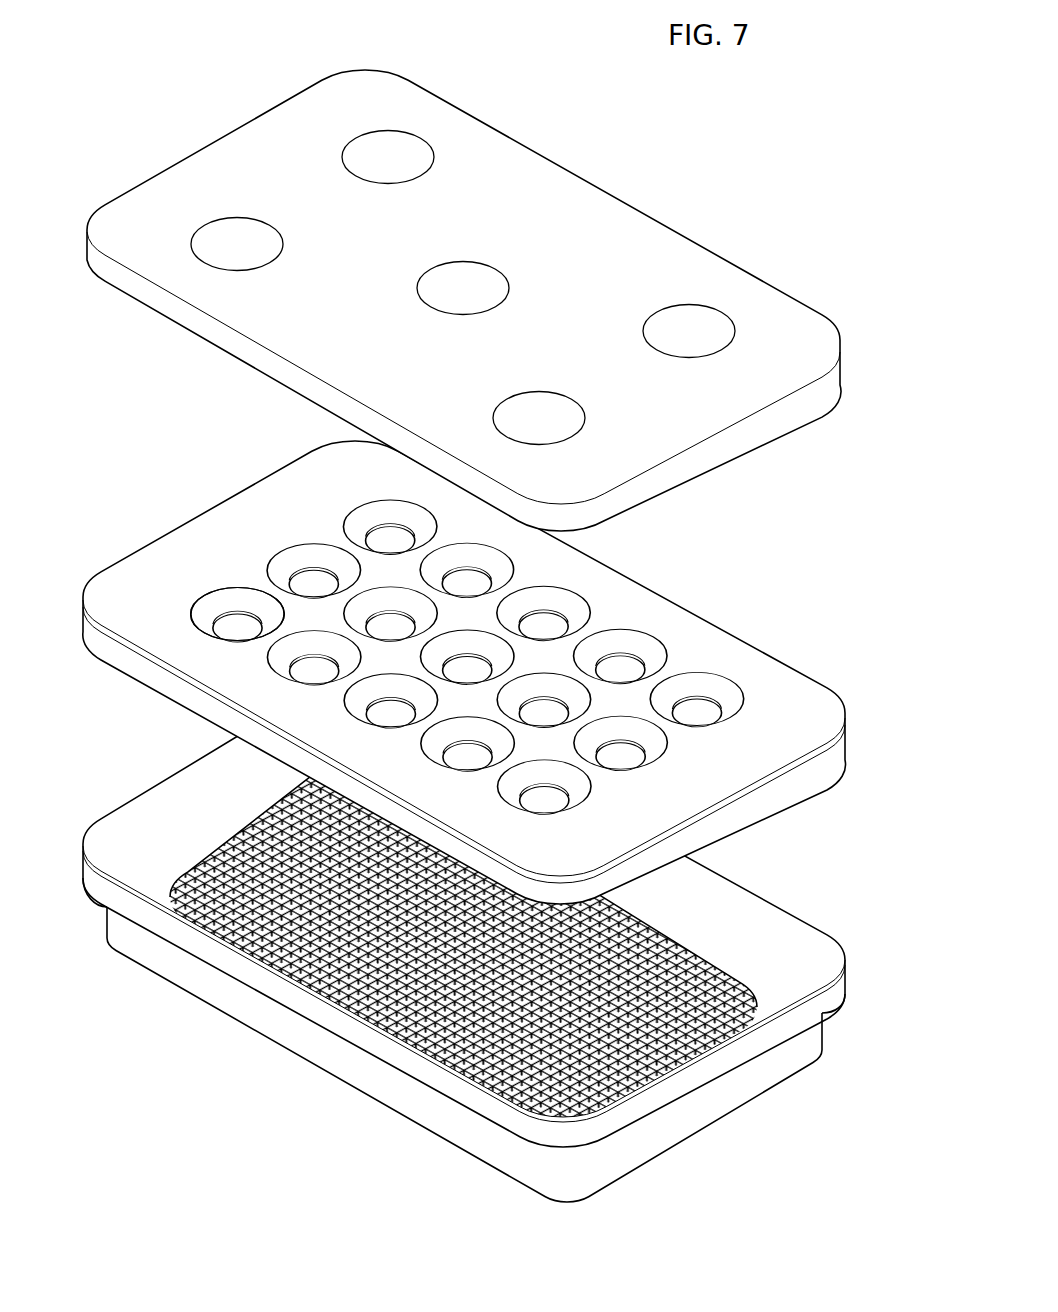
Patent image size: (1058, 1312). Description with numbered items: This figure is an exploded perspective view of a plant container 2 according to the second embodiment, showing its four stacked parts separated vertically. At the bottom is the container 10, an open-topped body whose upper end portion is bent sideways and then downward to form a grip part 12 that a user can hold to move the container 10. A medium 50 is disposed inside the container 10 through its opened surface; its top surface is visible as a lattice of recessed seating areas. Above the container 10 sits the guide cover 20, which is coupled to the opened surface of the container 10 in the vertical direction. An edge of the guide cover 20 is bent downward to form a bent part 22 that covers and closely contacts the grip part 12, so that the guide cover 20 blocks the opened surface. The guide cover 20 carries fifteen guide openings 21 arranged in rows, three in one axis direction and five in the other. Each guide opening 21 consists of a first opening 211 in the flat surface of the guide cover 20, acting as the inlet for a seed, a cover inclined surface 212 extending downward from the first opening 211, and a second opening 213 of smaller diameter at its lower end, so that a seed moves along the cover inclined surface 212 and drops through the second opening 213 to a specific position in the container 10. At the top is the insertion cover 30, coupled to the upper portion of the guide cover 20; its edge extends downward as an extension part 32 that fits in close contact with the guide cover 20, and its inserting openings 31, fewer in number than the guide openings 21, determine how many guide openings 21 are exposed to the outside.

The plant container 2 is at (97, 45).
The container 10 is at (156, 979).
The grip part 12 is at (315, 1008).
The guide cover 20 is at (93, 582).
The guide opening 21 is at (267, 440).
The first opening 211 is at (262, 588).
The cover inclined surface 212 is at (233, 603).
The second opening 213 is at (215, 630).
The bent part 22 is at (112, 649).
The insertion cover 30 is at (113, 205).
The inserting opening 31 is at (222, 219).
The extension part 32 is at (182, 312).
The medium 50 is at (239, 870).